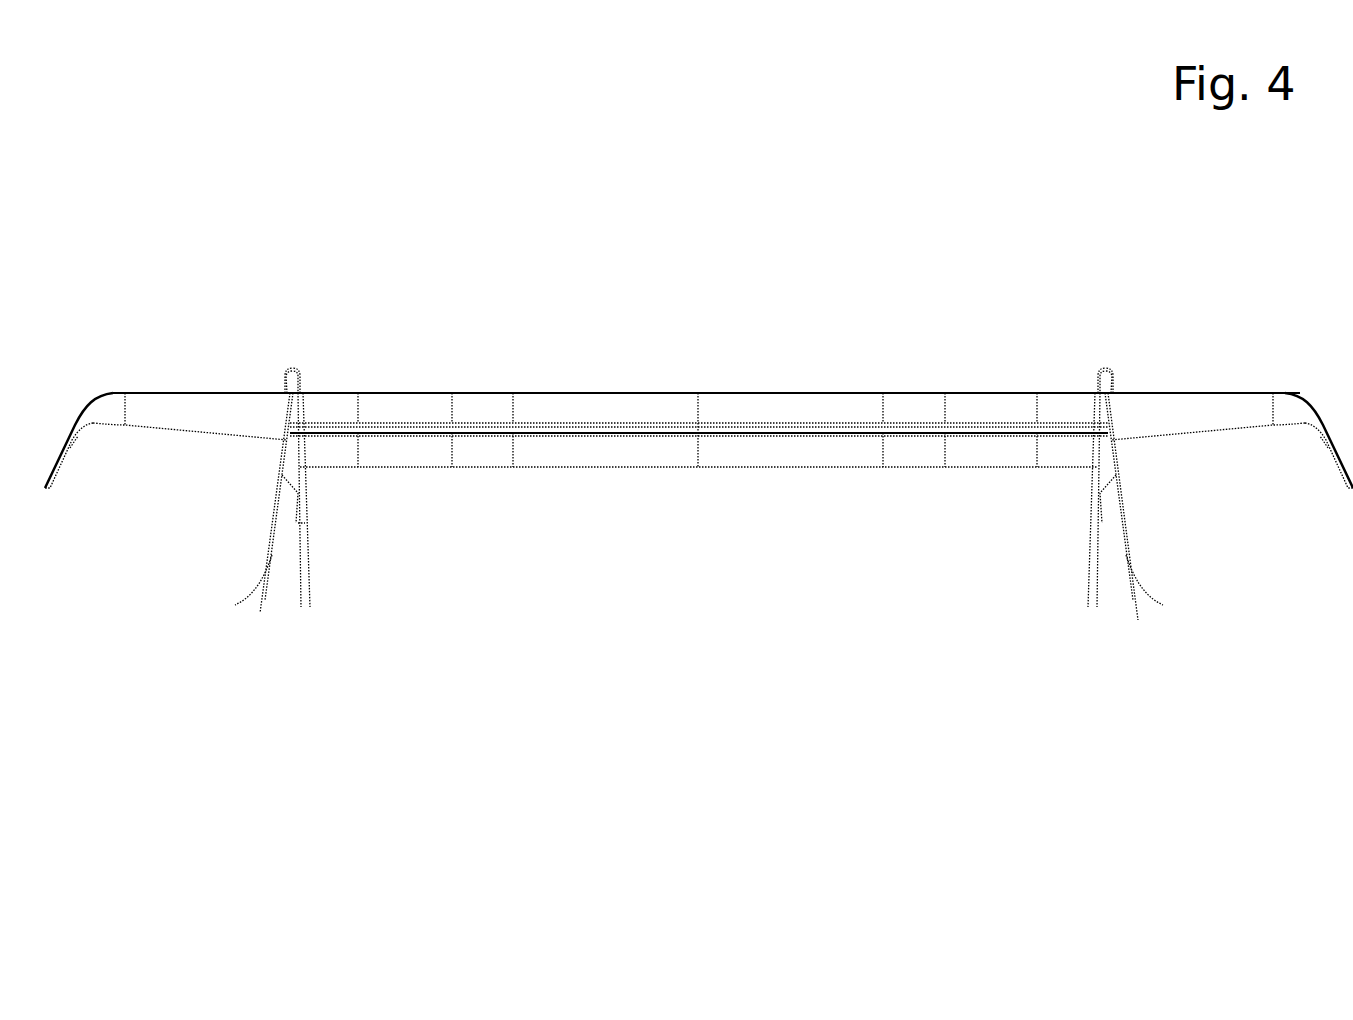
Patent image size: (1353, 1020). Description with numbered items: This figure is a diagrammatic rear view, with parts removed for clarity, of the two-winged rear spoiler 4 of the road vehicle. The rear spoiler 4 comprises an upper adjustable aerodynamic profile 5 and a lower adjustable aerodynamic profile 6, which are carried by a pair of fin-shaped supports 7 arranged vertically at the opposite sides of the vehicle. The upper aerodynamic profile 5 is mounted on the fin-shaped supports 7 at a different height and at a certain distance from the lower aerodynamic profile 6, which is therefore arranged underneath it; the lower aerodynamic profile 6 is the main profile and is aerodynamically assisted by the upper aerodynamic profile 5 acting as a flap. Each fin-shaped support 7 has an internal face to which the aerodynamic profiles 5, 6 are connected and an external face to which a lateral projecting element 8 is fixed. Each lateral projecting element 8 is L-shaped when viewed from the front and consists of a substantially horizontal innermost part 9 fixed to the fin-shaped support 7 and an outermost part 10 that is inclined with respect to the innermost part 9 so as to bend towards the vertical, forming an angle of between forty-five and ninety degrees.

The rear spoiler 4 is at (699, 513).
The upper adjustable aerodynamic profile 5 is at (757, 400).
The lower adjustable aerodynamic profile 6 is at (628, 450).
The fin-shaped support 7 is at (285, 565).
The lateral projecting element 8 is at (699, 394).
The innermost part 9 is at (215, 408).
The outermost part 10 is at (67, 453).